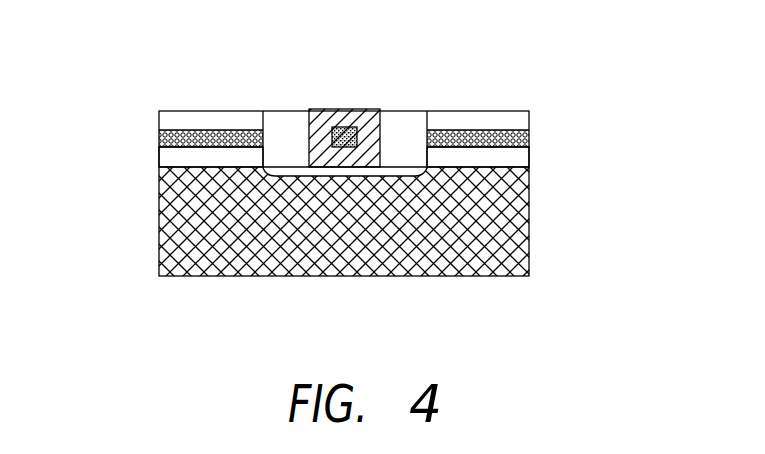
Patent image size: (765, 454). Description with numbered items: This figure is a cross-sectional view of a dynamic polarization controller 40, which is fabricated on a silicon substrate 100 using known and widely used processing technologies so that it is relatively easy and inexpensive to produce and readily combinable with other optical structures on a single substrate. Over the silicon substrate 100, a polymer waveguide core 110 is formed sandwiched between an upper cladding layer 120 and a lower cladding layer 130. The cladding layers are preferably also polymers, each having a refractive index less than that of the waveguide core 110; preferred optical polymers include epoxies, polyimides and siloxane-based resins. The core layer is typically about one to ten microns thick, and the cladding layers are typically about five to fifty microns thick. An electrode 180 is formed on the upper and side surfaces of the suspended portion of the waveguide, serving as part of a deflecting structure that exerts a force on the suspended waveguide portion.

The dynamic polarization controller 40 is at (548, 95).
The silicon substrate 100 is at (515, 232).
The polymer waveguide core 110 is at (333, 130).
The upper cladding layer 120 is at (168, 120).
The lower cladding layer 130 is at (168, 157).
The electrode 180 is at (373, 108).